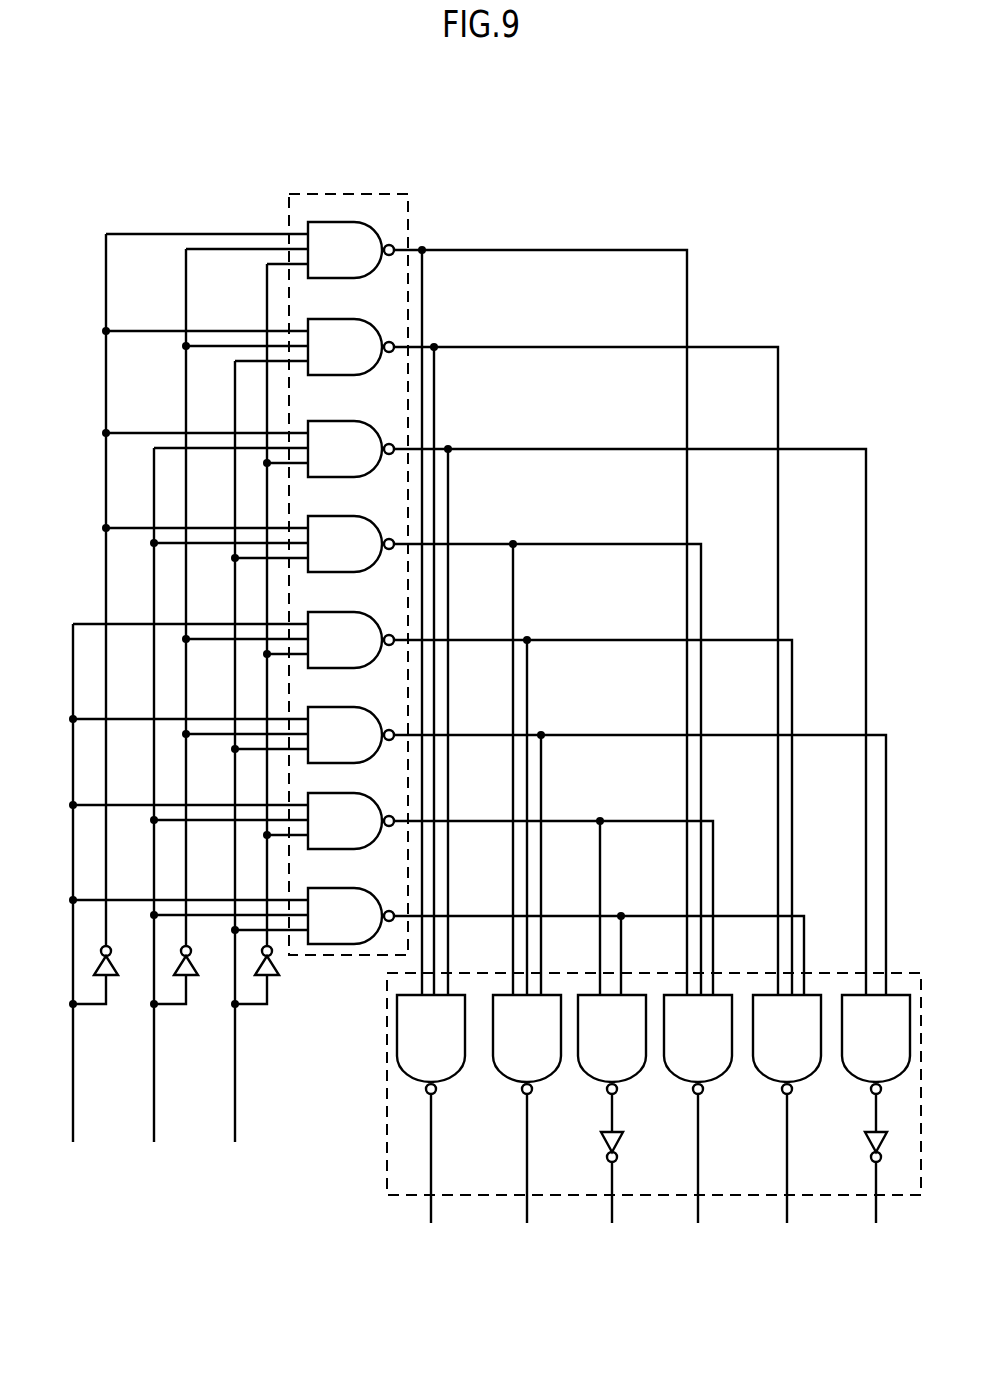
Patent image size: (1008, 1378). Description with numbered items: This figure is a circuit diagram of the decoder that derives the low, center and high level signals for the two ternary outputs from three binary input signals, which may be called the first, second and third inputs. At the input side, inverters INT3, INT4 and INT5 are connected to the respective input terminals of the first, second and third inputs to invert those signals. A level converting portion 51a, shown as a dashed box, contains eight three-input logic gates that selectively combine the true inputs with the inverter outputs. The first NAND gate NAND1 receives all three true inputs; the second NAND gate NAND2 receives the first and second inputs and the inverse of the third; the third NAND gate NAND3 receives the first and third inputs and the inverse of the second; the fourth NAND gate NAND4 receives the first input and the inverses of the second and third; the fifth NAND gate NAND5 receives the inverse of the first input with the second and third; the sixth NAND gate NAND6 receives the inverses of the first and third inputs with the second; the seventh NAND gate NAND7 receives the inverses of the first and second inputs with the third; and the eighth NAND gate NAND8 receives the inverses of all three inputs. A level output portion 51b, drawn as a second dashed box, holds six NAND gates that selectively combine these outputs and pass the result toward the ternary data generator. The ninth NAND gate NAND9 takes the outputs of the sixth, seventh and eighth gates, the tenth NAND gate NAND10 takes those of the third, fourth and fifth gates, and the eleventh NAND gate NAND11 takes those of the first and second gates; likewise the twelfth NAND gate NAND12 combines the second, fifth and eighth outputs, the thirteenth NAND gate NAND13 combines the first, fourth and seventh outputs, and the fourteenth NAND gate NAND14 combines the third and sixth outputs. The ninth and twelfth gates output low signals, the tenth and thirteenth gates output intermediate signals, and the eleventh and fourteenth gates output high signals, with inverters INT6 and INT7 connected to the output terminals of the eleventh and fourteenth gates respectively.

The level converting portion 51a is at (472, 651).
The level output portion 51b is at (607, 1119).
The first NAND gate NAND1 is at (436, 941).
The second NAND gate NAND2 is at (391, 894).
The third NAND gate NAND3 is at (477, 851).
The fourth NAND gate NAND4 is at (432, 803).
The fifth NAND gate NAND5 is at (401, 755).
The sixth NAND gate NAND6 is at (484, 708).
The seventh NAND gate NAND7 is at (440, 657).
The eighth NAND gate NAND8 is at (396, 608).
The ninth NAND gate NAND9 is at (431, 1129).
The tenth NAND gate NAND10 is at (527, 1129).
The eleventh NAND gate NAND11 is at (612, 1130).
The twelfth NAND gate NAND12 is at (698, 1129).
The thirteenth NAND gate NAND13 is at (787, 1129).
The fourteenth NAND gate NAND14 is at (876, 1130).
The inverter INT3 is at (113, 975).
The inverter INT4 is at (193, 975).
The inverter INT5 is at (275, 975).
The inverter INT6 is at (634, 1146).
The inverter INT7 is at (850, 1146).